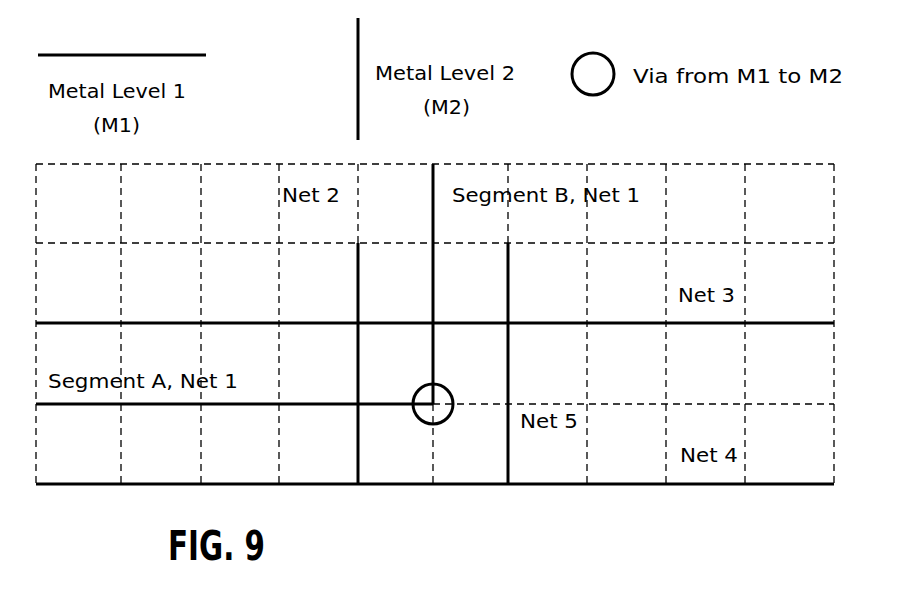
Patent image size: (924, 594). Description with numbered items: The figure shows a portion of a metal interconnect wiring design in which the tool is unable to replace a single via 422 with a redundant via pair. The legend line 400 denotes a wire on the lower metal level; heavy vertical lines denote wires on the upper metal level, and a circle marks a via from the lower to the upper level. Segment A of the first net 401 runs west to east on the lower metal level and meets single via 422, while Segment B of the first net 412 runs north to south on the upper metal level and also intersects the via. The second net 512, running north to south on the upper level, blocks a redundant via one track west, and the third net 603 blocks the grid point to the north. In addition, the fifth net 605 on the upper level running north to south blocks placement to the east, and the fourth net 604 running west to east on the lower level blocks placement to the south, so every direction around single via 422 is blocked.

The metal level 1 (M1) wire 400 is at (177, 55).
The Segment A, Net 1 on metal level M1 401 is at (238, 407).
The Segment B, Net 1 on metal level M2 412 is at (435, 273).
The single via 422 is at (437, 423).
The Net 2 512 is at (357, 276).
The Net 3 603 is at (704, 326).
The Net 4 604 is at (640, 487).
The Net 5 605 is at (510, 357).